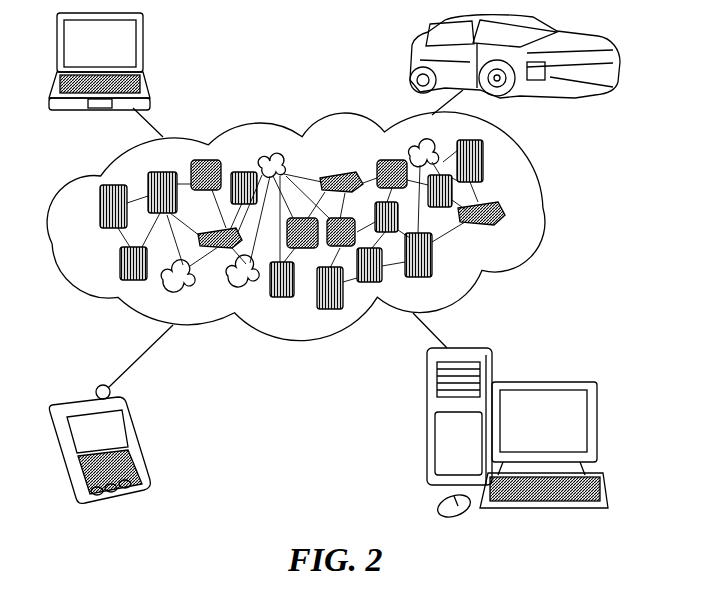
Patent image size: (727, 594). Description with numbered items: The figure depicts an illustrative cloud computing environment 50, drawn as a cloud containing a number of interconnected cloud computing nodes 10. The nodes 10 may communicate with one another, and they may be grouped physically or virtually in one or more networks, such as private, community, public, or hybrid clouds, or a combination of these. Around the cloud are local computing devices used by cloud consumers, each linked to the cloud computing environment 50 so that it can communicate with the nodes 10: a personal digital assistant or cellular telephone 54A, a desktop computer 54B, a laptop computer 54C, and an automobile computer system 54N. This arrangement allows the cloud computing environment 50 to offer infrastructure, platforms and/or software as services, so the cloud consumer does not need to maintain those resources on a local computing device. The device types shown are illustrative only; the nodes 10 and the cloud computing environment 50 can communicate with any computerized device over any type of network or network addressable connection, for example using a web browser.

The cloud computing nodes 10 is at (506, 230).
The cloud computing environment 50 is at (545, 208).
The personal digital assistant or cellular telephone 54A is at (138, 438).
The desktop computer 54B is at (540, 381).
The laptop computer 54C is at (145, 49).
The automobile computer system 54N is at (413, 58).